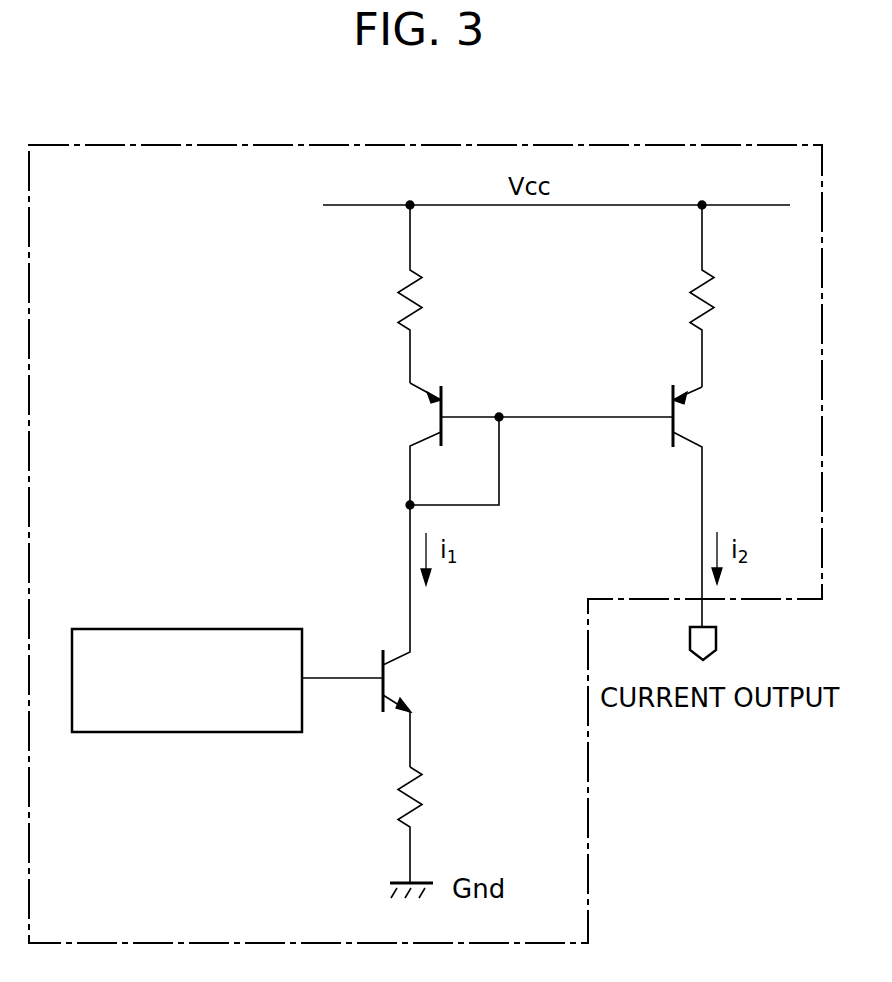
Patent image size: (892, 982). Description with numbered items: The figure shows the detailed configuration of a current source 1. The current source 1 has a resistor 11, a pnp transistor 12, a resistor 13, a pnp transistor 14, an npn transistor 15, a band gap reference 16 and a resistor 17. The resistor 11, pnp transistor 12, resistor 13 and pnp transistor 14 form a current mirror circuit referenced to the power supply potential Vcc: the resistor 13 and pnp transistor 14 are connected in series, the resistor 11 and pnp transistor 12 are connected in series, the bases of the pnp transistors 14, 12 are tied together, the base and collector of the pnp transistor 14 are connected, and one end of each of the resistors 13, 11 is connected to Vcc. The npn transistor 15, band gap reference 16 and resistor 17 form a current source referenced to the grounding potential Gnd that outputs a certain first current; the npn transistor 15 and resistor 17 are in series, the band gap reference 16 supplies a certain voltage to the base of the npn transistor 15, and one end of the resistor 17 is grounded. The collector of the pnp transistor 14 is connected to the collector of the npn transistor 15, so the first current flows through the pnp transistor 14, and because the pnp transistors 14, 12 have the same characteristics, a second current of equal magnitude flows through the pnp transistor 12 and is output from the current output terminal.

The current source 1 is at (740, 143).
The resistor 11 is at (710, 306).
The pnp transistor 12 is at (700, 418).
The resistor 13 is at (418, 296).
The pnp transistor 14 is at (415, 420).
The npn transistor 15 is at (410, 676).
The band gap reference 16 is at (175, 629).
The resistor 17 is at (418, 788).